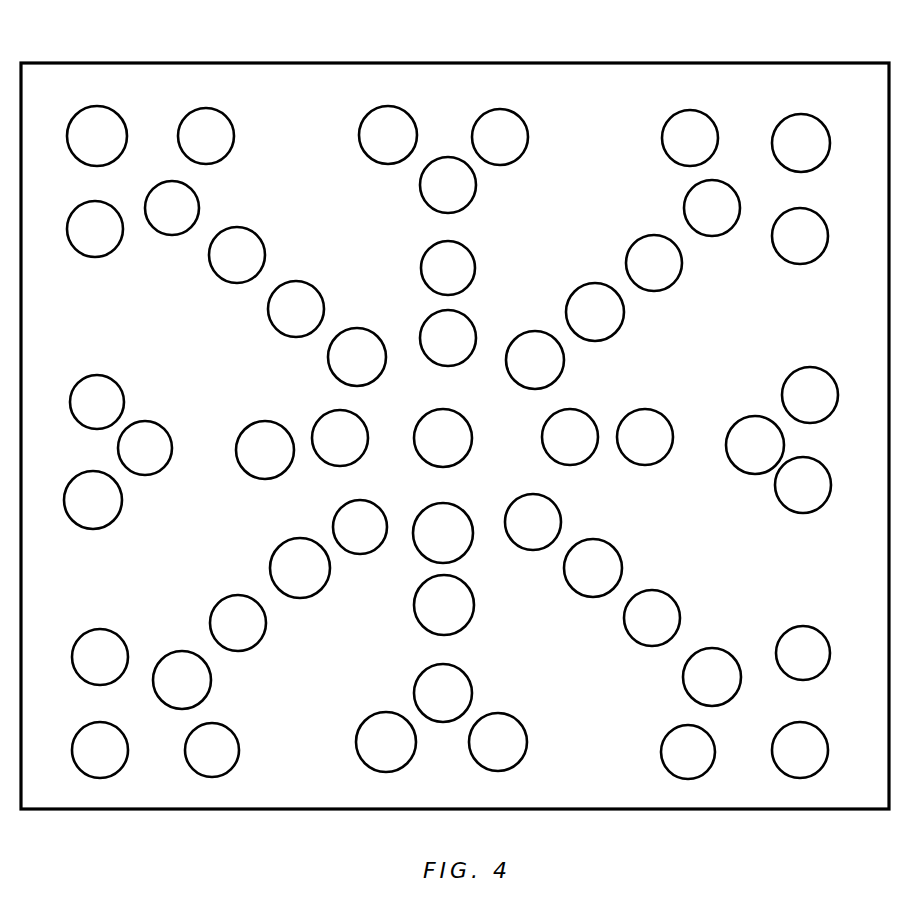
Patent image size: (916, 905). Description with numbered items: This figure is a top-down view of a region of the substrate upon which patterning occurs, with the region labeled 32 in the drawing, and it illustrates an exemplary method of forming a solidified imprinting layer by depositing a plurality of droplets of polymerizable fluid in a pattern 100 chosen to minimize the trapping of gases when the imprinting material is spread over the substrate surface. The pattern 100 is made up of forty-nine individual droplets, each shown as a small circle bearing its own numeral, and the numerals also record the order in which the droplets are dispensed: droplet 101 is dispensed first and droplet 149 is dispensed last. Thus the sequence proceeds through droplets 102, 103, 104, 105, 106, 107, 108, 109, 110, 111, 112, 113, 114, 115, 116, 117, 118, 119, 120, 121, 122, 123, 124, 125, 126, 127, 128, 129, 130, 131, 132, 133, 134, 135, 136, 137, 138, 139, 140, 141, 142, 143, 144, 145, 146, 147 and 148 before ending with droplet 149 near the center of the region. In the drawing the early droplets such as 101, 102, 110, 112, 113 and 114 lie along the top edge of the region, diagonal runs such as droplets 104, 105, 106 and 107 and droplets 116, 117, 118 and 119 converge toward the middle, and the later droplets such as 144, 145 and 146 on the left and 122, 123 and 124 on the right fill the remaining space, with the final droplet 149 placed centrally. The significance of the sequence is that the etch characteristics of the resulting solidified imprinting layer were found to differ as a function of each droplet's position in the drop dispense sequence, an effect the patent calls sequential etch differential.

The pattern 100 is at (590, 117).
The sensor panel region 32 is at (740, 347).
The droplet 101 is at (97, 136).
The droplet 102 is at (206, 136).
The droplet 103 is at (95, 229).
The droplet 104 is at (172, 208).
The droplet 105 is at (237, 255).
The droplet 106 is at (296, 309).
The droplet 107 is at (357, 357).
The droplet 108 is at (448, 338).
The droplet 109 is at (448, 268).
The droplet 110 is at (388, 135).
The droplet 111 is at (448, 185).
The droplet 112 is at (500, 137).
The droplet 113 is at (690, 138).
The droplet 114 is at (801, 143).
The droplet 115 is at (800, 236).
The droplet 116 is at (712, 208).
The droplet 117 is at (654, 263).
The droplet 118 is at (595, 312).
The droplet 119 is at (535, 360).
The droplet 120 is at (570, 437).
The droplet 121 is at (645, 437).
The droplet 122 is at (810, 395).
The droplet 123 is at (755, 445).
The droplet 124 is at (803, 485).
The droplet 125 is at (803, 653).
The droplet 126 is at (800, 750).
The droplet 127 is at (688, 752).
The droplet 128 is at (712, 677).
The droplet 129 is at (652, 618).
The droplet 130 is at (593, 568).
The droplet 131 is at (533, 522).
The droplet 132 is at (443, 533).
The droplet 133 is at (444, 605).
The droplet 134 is at (498, 742).
The droplet 135 is at (443, 693).
The droplet 136 is at (386, 742).
The droplet 137 is at (360, 527).
The droplet 138 is at (300, 568).
The droplet 139 is at (238, 623).
The droplet 140 is at (182, 680).
The droplet 141 is at (212, 750).
The droplet 142 is at (100, 750).
The droplet 143 is at (100, 657).
The droplet 144 is at (93, 500).
The droplet 145 is at (145, 448).
The droplet 146 is at (97, 402).
The droplet 147 is at (265, 450).
The droplet 148 is at (340, 438).
The droplet 149 is at (443, 438).